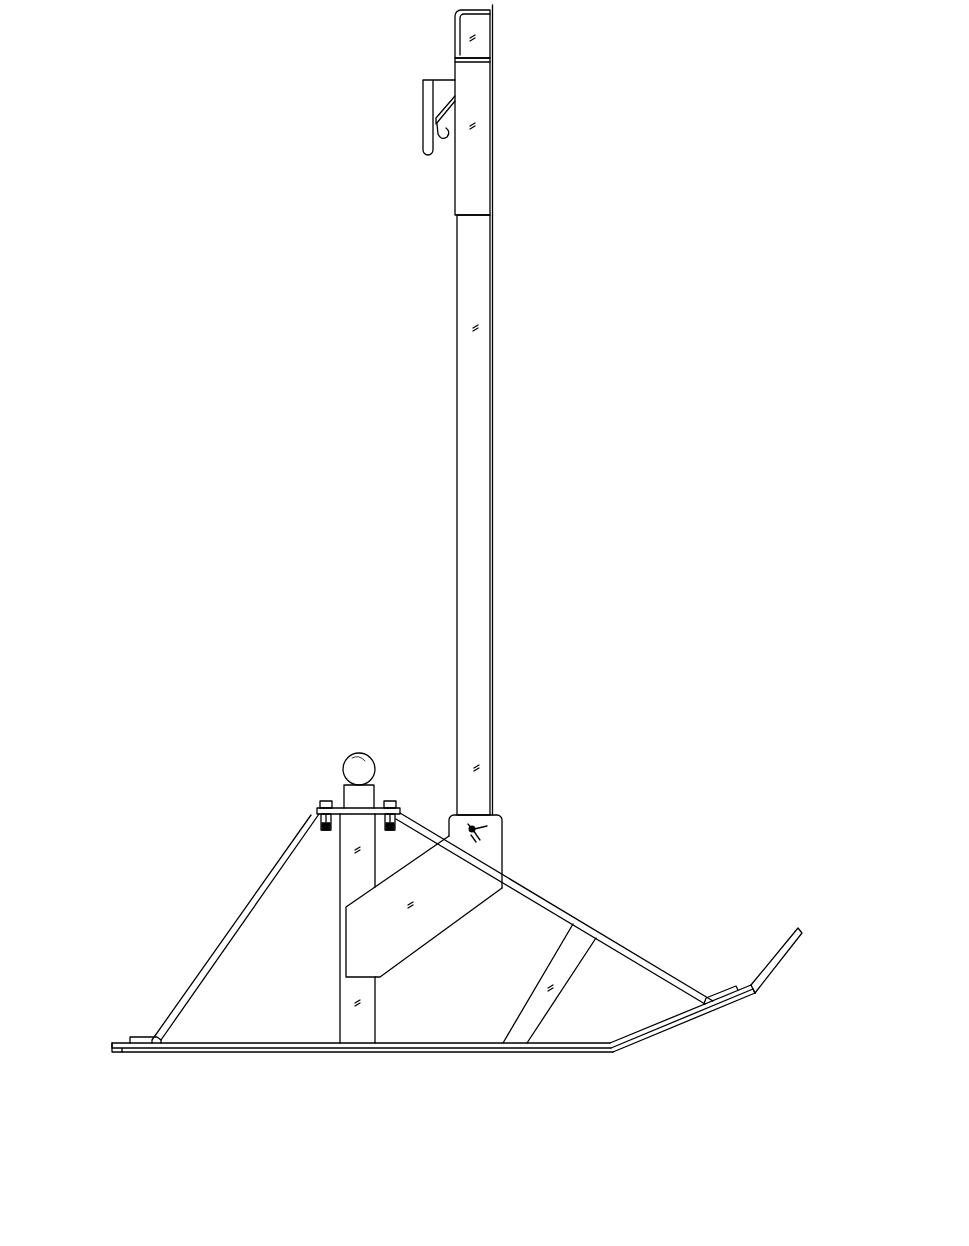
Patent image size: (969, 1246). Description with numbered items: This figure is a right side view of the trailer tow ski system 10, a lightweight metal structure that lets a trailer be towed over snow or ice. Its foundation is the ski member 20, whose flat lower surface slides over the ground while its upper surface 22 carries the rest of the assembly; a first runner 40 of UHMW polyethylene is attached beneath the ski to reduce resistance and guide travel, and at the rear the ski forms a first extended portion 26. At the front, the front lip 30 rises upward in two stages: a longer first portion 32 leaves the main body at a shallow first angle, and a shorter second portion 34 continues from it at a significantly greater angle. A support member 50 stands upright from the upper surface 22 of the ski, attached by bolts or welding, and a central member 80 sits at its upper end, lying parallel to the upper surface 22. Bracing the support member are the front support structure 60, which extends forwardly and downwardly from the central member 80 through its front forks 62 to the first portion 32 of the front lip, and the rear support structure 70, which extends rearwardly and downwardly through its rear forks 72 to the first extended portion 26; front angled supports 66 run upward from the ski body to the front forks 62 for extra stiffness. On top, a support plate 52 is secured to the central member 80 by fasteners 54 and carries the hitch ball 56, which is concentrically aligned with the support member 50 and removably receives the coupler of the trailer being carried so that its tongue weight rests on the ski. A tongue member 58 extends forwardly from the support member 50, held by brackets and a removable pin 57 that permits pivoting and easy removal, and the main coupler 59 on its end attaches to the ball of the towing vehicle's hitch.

The trailer tow ski system 10 is at (660, 145).
The ski member 20 is at (273, 1043).
The upper surface 22 is at (440, 1042).
The first extended portion 26 is at (112, 1042).
The front lip 30 is at (770, 982).
The first portion 32 is at (658, 1022).
The second portion 34 is at (772, 968).
The first runner 40 is at (445, 1047).
The support member 50 is at (340, 1008).
The support plate 52 is at (333, 805).
The fasteners 54 is at (325, 803).
The hitch ball 56 is at (346, 763).
The removable pin 57 is at (507, 822).
The tongue member 58 is at (457, 400).
The main coupler 59 is at (455, 32).
The front support structure 60 is at (633, 945).
The front forks 62 is at (546, 898).
The front angled supports 66 is at (544, 1025).
The rear support structure 70 is at (215, 940).
The rear forks 72 is at (190, 987).
The central member 80 is at (333, 830).